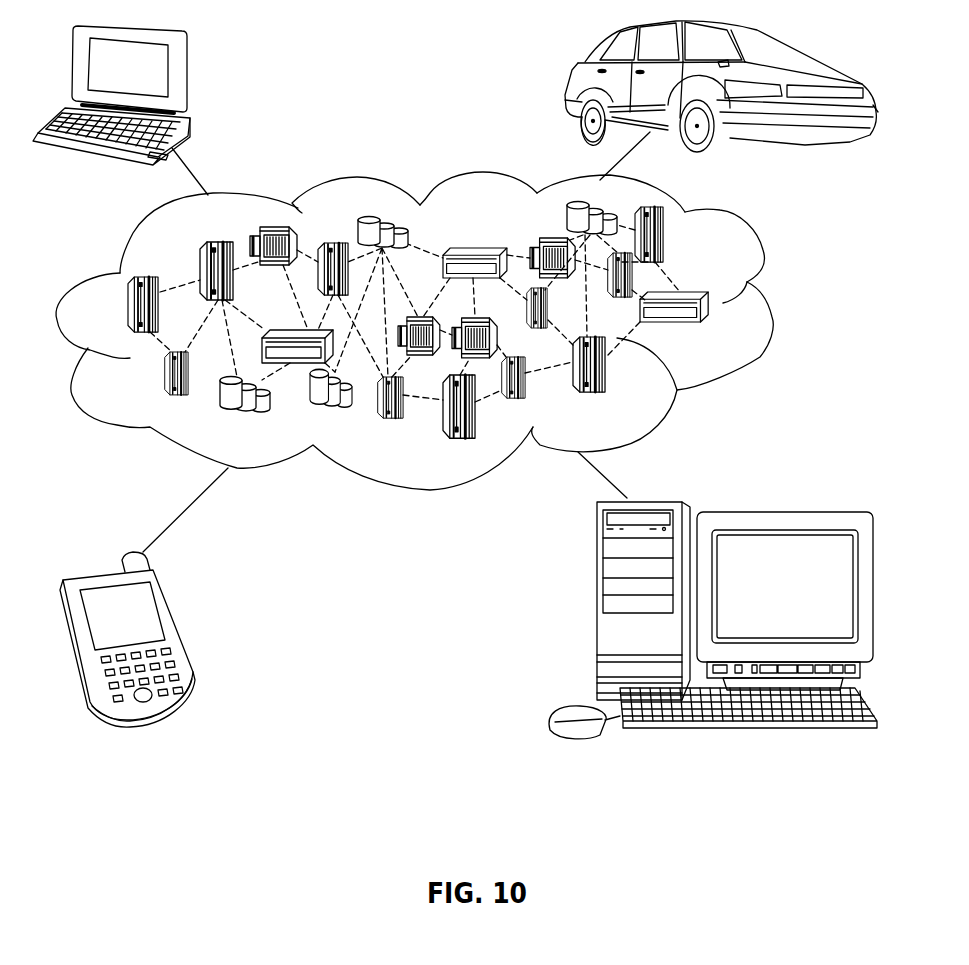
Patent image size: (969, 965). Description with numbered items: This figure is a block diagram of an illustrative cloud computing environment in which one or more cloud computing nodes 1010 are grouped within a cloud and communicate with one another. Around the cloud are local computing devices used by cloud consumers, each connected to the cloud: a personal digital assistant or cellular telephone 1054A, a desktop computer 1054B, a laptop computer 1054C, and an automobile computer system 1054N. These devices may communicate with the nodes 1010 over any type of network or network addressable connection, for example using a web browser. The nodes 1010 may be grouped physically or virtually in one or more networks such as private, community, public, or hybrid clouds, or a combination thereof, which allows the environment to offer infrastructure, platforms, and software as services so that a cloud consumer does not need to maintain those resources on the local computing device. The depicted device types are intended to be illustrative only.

The cloud computing nodes 1010 is at (728, 327).
The personal digital assistant (PDA) or cellular telephone 1054A is at (177, 625).
The desktop computer 1054B is at (597, 607).
The laptop computer 1054C is at (188, 72).
The automobile computer system 1054N is at (575, 78).